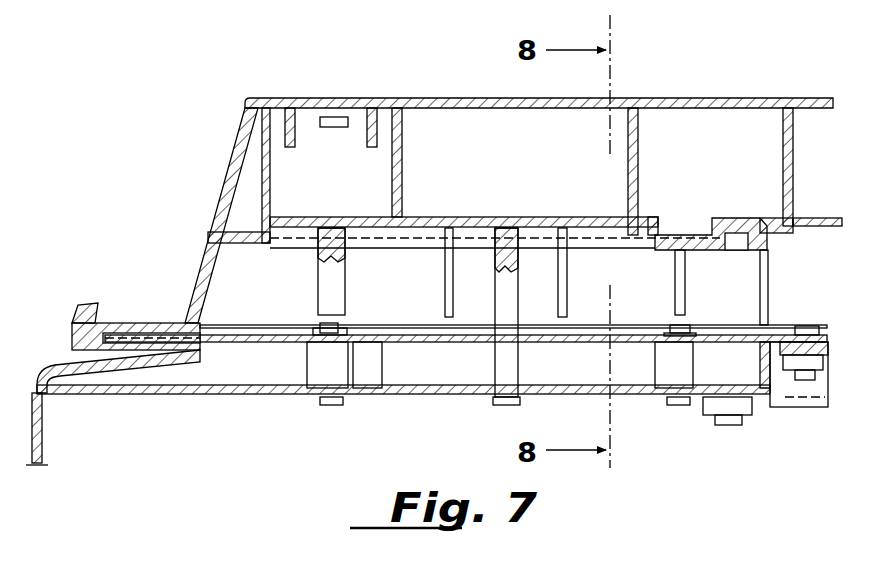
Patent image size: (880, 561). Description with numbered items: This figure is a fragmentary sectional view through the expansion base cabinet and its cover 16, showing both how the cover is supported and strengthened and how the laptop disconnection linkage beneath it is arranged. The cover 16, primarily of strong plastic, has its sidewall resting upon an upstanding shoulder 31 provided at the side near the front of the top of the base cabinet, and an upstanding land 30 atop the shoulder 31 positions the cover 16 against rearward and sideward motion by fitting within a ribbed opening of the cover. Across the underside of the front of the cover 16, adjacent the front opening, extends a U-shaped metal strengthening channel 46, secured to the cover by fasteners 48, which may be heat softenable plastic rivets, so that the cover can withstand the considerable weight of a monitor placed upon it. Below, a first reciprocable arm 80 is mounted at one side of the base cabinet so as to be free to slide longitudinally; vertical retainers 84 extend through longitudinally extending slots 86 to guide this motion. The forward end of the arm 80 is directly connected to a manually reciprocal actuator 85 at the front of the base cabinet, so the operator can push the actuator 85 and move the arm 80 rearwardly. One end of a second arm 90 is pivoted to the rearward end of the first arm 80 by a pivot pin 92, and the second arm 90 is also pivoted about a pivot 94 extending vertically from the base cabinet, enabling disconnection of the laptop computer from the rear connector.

The cover 16 is at (739, 96).
The upstanding land 30 is at (656, 218).
The upstanding shoulder 31 is at (208, 258).
The U-shaped metal strengthening channel 46 is at (299, 100).
The fastener 48 is at (332, 128).
The first reciprocable arm 80 is at (384, 345).
The vertical retainer 84 is at (340, 323).
The manually reciprocal actuator 85 is at (143, 322).
The longitudinally extending slot 86 is at (280, 343).
The second arm 90 is at (770, 402).
The pivot pin 92 is at (803, 325).
The pivot 94 is at (732, 427).